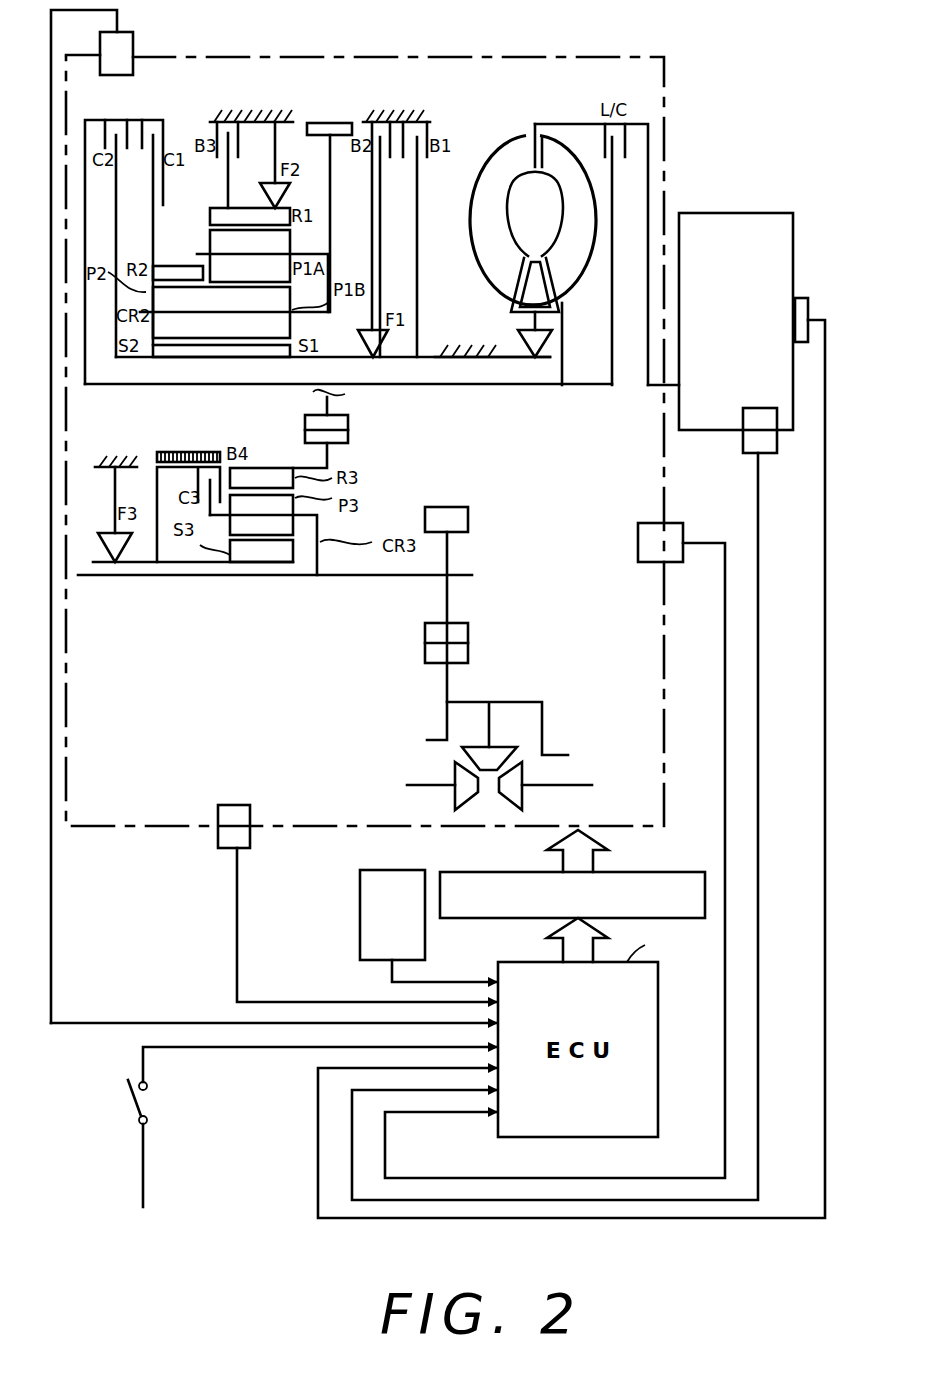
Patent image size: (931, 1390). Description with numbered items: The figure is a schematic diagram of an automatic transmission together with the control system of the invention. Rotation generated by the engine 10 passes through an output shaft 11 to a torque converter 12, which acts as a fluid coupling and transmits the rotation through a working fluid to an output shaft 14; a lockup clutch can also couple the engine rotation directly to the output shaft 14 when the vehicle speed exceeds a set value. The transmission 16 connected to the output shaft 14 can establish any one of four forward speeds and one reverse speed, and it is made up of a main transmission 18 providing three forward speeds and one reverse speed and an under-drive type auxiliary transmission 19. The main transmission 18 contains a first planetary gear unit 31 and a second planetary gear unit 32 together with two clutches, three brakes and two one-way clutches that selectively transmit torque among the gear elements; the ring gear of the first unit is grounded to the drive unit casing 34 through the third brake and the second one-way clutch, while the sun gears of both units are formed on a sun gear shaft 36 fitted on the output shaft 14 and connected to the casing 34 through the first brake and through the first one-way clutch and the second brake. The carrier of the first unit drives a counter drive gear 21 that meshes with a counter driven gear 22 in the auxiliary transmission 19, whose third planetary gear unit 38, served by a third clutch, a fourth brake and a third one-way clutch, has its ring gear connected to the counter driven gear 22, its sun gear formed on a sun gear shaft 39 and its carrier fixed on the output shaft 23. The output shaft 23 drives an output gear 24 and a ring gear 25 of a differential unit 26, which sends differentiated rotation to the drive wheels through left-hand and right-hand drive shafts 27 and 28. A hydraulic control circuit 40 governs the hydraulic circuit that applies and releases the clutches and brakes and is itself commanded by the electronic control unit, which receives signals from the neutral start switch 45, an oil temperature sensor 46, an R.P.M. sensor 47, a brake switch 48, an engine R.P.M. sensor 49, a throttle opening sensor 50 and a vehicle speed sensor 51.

The engine 10 is at (772, 213).
The output shaft 11 is at (648, 148).
The torque converter 12 is at (552, 108).
The output shaft 14 is at (535, 386).
The transmission 16 is at (459, 112).
The main transmission 18 is at (343, 62).
The auxiliary transmission 19 is at (205, 580).
The counter drive gear 21 is at (320, 122).
The counter driven gear 22 is at (350, 440).
The output shaft 23 is at (340, 578).
The output gear 24 is at (455, 507).
The ring gear 25 is at (470, 657).
The differential unit 26 is at (557, 692).
The left-hand drive shaft 27 is at (438, 785).
The right-hand drive shaft 28 is at (560, 785).
The first planetary gear unit 31 is at (316, 240).
The second planetary gear unit 32 is at (168, 250).
The drive unit casing 34 is at (247, 107).
The sun gear shaft 36 is at (124, 386).
The third planetary gear unit 38 is at (272, 596).
The sun gear shaft 39 is at (172, 565).
The hydraulic control circuit 40 is at (625, 870).
The neutral start switch 45 is at (360, 914).
The oil temperature sensor 46 is at (218, 842).
The R.P.M. sensor 47 is at (136, 38).
The brake switch 48 is at (150, 1106).
The engine R.P.M. sensor 49 is at (806, 298).
The throttle opening sensor 50 is at (768, 455).
The vehicle speed sensor 51 is at (683, 524).